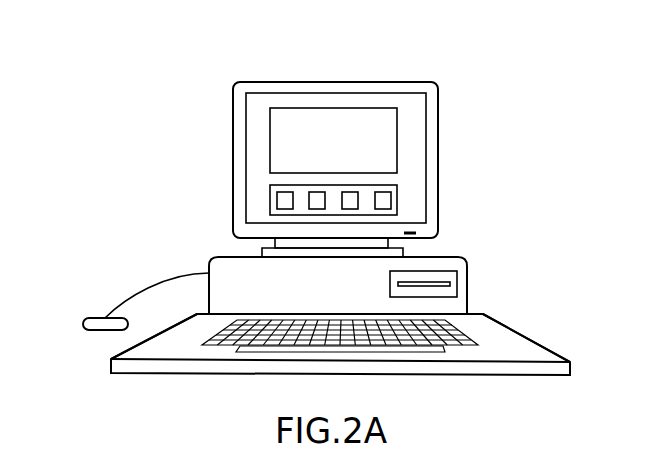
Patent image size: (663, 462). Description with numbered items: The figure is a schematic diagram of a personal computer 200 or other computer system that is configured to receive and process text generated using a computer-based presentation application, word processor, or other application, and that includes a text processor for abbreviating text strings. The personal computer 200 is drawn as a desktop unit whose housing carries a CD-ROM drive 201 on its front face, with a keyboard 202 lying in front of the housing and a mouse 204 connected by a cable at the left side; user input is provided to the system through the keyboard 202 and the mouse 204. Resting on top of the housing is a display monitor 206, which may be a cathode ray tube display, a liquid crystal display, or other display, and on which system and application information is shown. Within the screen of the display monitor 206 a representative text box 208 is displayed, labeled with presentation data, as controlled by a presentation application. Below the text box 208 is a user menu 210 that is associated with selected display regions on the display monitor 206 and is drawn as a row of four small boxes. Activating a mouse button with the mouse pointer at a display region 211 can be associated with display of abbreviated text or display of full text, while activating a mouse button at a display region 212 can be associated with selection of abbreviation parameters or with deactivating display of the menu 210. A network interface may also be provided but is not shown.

The personal computer 200 is at (168, 73).
The CD-ROM drive 201 is at (457, 284).
The keyboard 202 is at (523, 337).
The mouse 204 is at (93, 318).
The display monitor 206 is at (438, 150).
The text box 208 is at (343, 108).
The user menu 210 is at (397, 200).
The display region 211 is at (304, 186).
The display region 212 is at (277, 200).